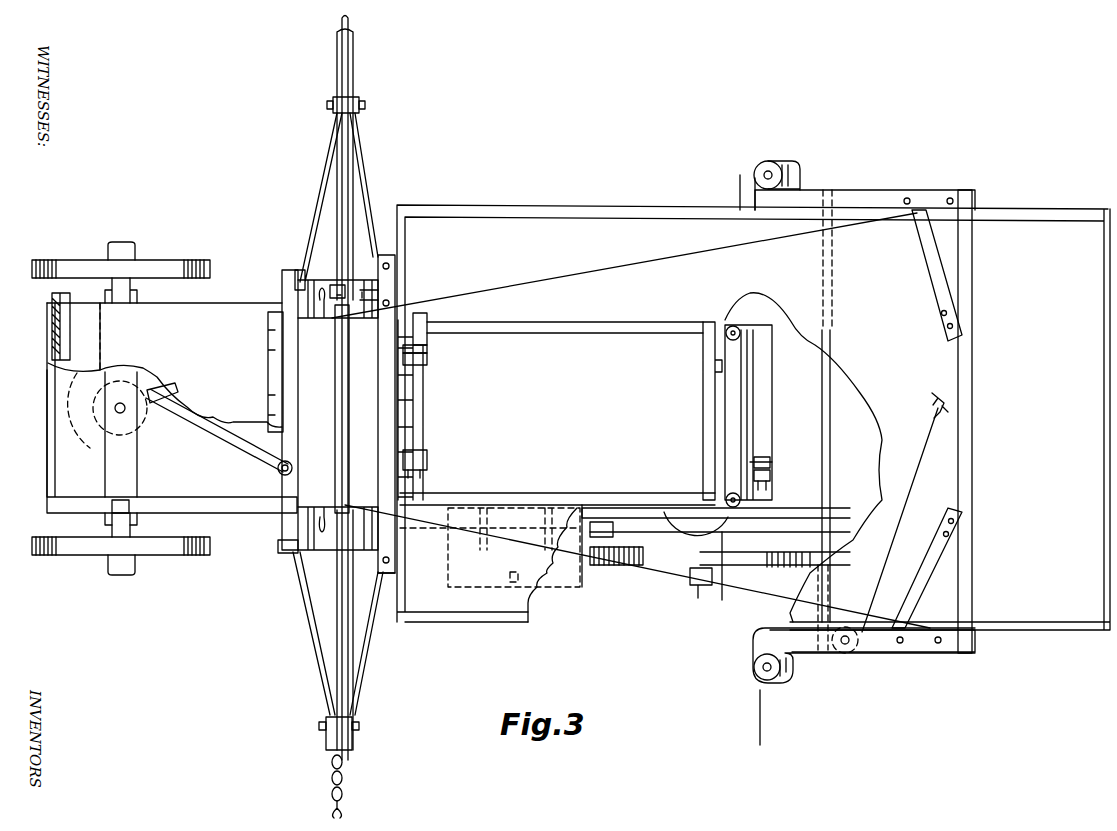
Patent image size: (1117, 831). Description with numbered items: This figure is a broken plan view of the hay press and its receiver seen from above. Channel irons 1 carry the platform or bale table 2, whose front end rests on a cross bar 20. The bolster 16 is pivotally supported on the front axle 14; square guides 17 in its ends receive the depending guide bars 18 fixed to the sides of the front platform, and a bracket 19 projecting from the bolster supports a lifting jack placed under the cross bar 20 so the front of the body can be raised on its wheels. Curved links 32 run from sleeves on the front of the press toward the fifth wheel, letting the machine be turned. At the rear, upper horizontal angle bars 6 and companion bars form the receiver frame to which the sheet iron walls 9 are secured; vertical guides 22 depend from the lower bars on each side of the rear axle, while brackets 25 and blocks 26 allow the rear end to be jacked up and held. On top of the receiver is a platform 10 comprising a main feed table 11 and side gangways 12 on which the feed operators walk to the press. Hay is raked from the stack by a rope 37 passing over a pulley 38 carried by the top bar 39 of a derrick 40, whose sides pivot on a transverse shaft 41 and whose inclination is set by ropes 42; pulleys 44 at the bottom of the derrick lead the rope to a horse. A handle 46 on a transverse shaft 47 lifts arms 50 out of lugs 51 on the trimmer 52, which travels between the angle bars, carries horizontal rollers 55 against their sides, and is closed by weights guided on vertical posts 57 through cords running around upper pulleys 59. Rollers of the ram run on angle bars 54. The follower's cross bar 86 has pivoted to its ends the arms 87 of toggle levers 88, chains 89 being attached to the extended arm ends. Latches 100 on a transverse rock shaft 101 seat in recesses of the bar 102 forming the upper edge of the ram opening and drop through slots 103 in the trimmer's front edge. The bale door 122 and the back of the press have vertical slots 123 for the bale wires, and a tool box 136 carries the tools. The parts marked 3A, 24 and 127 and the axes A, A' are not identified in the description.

The channel irons 1 is at (53, 505).
The platform or bale table 2 is at (164, 365).
The axle bearing 3A is at (92, 398).
The upper horizontal angle bars 6 is at (640, 522).
The sheet iron walls 9 is at (612, 512).
The platform 10 is at (736, 182).
The main feed table 11 is at (1044, 466).
The side gangways 12 is at (514, 226).
The front axle 14 is at (128, 287).
The bolster 16 is at (128, 452).
The square guides 17 is at (135, 520).
The depending guide bars 18 is at (128, 506).
The bracket 19 is at (67, 425).
The cross bar 20 is at (60, 470).
The vertical guides 22 is at (672, 537).
The shaft 24 is at (728, 568).
The brackets 25 is at (693, 547).
The blocks 26 is at (600, 537).
The curved links 32 is at (229, 442).
The rope 37 is at (906, 498).
The pulley 38 is at (938, 405).
The top bar 39 is at (971, 364).
The derrick 40 is at (925, 197).
The transverse shaft 41 is at (829, 463).
The ropes 42 is at (600, 270).
The pulleys 44 is at (782, 163).
The handle 46 is at (743, 637).
The transverse shaft 47 is at (740, 590).
The arms 50 is at (763, 472).
The lugs 51 is at (765, 458).
The trimmer 52 is at (803, 457).
The angle bars 54 is at (570, 505).
The horizontal rollers 55 is at (714, 325).
The vertical posts 57 is at (382, 574).
The upper pulleys 59 is at (383, 280).
The cross bar 86 is at (338, 297).
The arms 87 is at (340, 63).
The toggle levers 88 is at (352, 100).
The chains 89 is at (345, 770).
The latches 100 is at (423, 453).
The transverse rock shaft 101 is at (424, 408).
The bar 102 is at (410, 380).
The slots or recesses 103 is at (703, 368).
The door 122 is at (271, 326).
The vertical slots 123 is at (410, 370).
The bracket 127 is at (50, 347).
The tool box 136 is at (567, 582).
The axis A is at (310, 483).
The axis A' is at (361, 454).